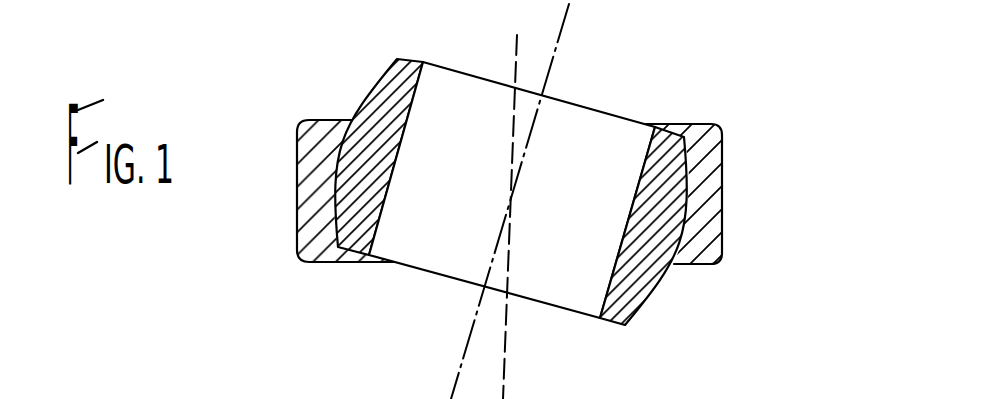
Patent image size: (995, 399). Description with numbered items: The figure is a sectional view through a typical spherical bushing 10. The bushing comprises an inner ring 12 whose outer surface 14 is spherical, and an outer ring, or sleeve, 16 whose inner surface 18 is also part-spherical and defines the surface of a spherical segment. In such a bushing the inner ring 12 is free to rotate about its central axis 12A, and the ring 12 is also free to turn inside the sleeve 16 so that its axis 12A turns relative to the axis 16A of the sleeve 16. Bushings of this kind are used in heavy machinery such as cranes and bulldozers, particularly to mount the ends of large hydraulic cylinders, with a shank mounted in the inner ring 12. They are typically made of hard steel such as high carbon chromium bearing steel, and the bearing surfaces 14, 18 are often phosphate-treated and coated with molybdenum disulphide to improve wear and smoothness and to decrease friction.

The spherical bushing 10 is at (263, 244).
The inner ring 12 is at (566, 183).
The central axis of the inner ring 12A is at (569, 4).
The outer surface of the inner ring 14 is at (652, 303).
The outer ring or sleeve 16 is at (722, 207).
The axis of the sleeve 16A is at (506, 369).
The inner surface of the sleeve 18 is at (689, 157).